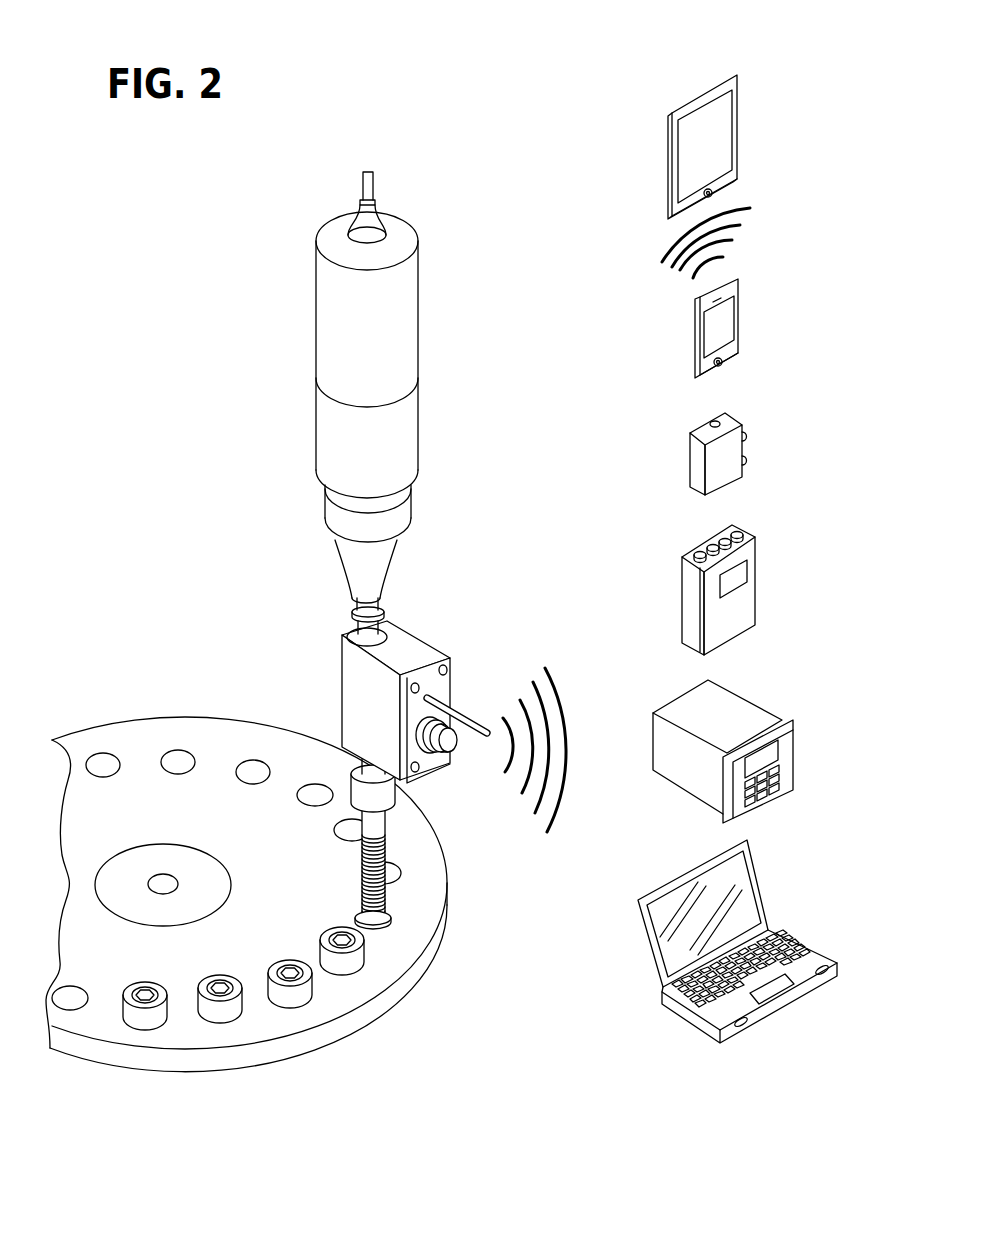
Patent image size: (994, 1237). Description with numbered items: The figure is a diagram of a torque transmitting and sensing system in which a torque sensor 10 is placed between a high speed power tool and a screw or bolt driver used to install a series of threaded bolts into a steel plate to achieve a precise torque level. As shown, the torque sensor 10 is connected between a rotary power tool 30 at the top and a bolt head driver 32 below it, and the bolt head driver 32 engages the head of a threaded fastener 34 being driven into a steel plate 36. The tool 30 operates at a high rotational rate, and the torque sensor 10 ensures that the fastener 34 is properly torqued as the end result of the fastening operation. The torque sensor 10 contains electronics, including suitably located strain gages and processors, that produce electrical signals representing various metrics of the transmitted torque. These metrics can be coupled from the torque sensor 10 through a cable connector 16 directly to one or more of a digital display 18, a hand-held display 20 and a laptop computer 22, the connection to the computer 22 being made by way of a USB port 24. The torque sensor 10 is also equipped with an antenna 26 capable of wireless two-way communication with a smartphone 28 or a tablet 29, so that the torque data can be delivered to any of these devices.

The torque sensor 10 is at (350, 668).
The cable connector 16 is at (452, 747).
The digital display 18 is at (782, 722).
The hand-held display 20 is at (757, 557).
The laptop computer 22 is at (762, 888).
The USB port 24 is at (746, 430).
The antenna 26 is at (458, 705).
The smartphone 28 is at (695, 327).
The tablet 29 is at (740, 117).
The rotary power tool 30 is at (418, 393).
The bolt head driver 32 is at (352, 786).
The threaded fastener 34 is at (388, 892).
The steel plate 36 is at (338, 993).